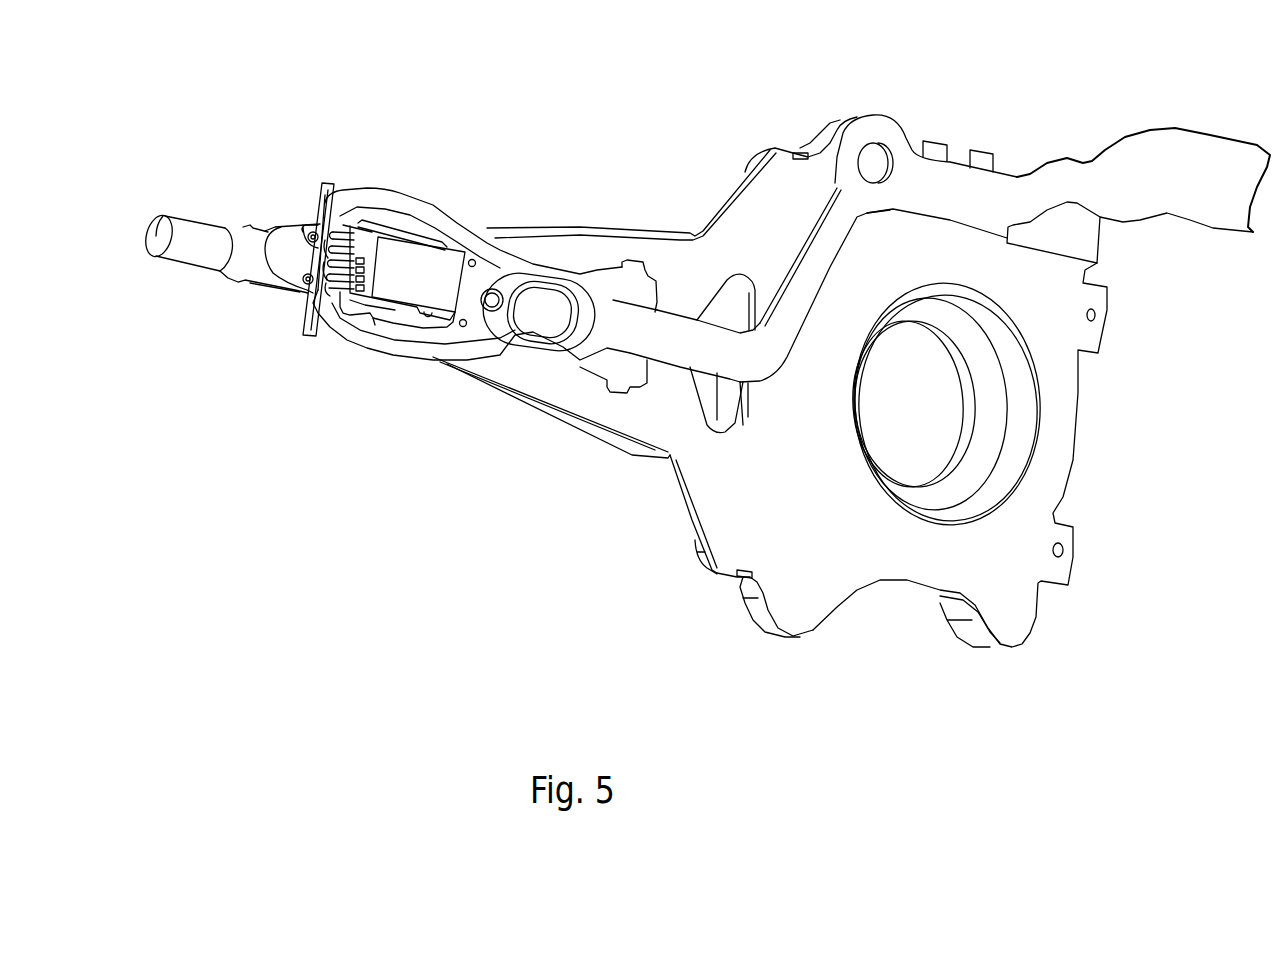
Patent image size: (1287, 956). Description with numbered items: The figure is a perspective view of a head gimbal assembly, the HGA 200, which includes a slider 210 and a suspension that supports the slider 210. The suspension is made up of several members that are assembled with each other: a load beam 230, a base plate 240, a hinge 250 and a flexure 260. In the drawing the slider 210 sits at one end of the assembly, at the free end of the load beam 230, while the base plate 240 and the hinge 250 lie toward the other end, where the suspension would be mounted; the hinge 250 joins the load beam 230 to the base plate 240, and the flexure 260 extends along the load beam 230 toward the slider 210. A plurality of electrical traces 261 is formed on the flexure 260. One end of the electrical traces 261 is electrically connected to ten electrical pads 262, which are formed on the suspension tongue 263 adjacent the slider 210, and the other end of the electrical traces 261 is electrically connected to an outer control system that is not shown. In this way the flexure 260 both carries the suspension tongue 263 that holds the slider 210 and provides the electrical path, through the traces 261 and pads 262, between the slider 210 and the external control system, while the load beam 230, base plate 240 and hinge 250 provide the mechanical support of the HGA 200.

The HGA 200 is at (247, 95).
The slider 210 is at (422, 261).
The load beam 230 is at (577, 390).
The base plate 240 is at (762, 612).
The hinge 250 is at (892, 545).
The flexure 260 is at (632, 288).
The electrical traces 261 is at (378, 190).
The electrical pads 262 is at (312, 287).
The suspension tongue 263 is at (379, 305).